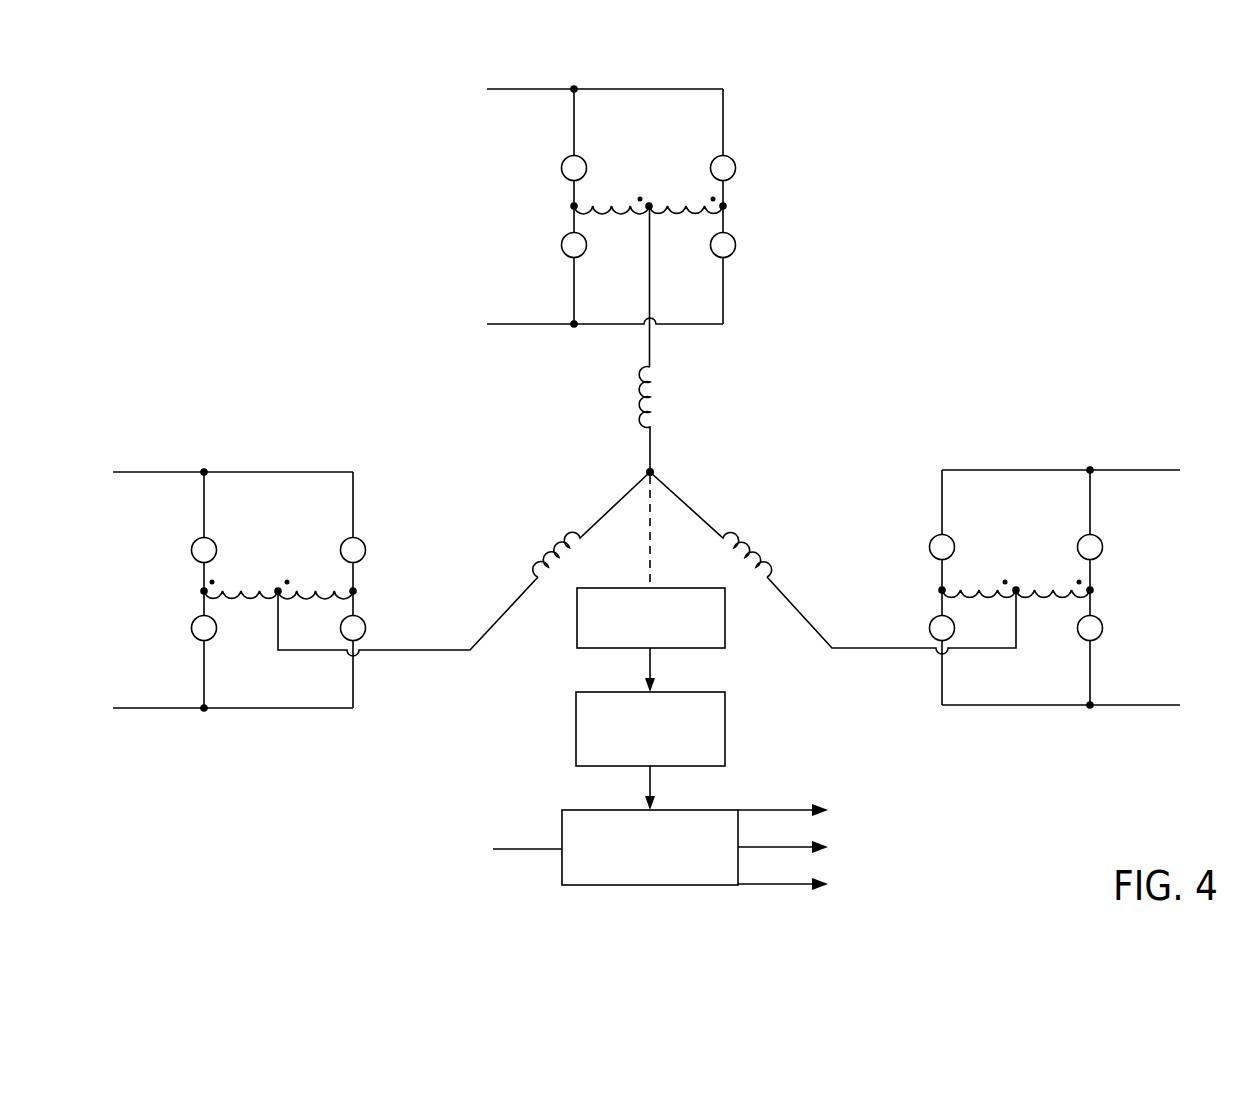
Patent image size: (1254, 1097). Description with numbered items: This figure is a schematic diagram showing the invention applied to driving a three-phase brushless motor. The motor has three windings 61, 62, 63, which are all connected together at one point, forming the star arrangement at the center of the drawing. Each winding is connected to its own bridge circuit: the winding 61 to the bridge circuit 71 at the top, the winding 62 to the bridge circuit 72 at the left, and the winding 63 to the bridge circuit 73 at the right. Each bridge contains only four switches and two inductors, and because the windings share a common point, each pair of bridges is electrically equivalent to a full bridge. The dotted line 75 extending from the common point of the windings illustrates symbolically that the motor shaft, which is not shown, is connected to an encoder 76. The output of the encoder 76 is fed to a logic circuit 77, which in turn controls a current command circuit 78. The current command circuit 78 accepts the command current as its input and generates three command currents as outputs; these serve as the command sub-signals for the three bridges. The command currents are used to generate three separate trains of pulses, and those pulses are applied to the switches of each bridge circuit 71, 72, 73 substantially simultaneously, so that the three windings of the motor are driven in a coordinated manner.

The winding 61 is at (655, 410).
The winding 62 is at (553, 550).
The winding 63 is at (742, 545).
The bridge circuit 71 is at (654, 82).
The bridge circuit 72 is at (282, 465).
The bridge circuit 73 is at (1026, 462).
The dotted line 75 is at (653, 567).
The encoder 76 is at (583, 613).
The logic circuit 77 is at (583, 728).
The current command circuit 78 is at (692, 825).